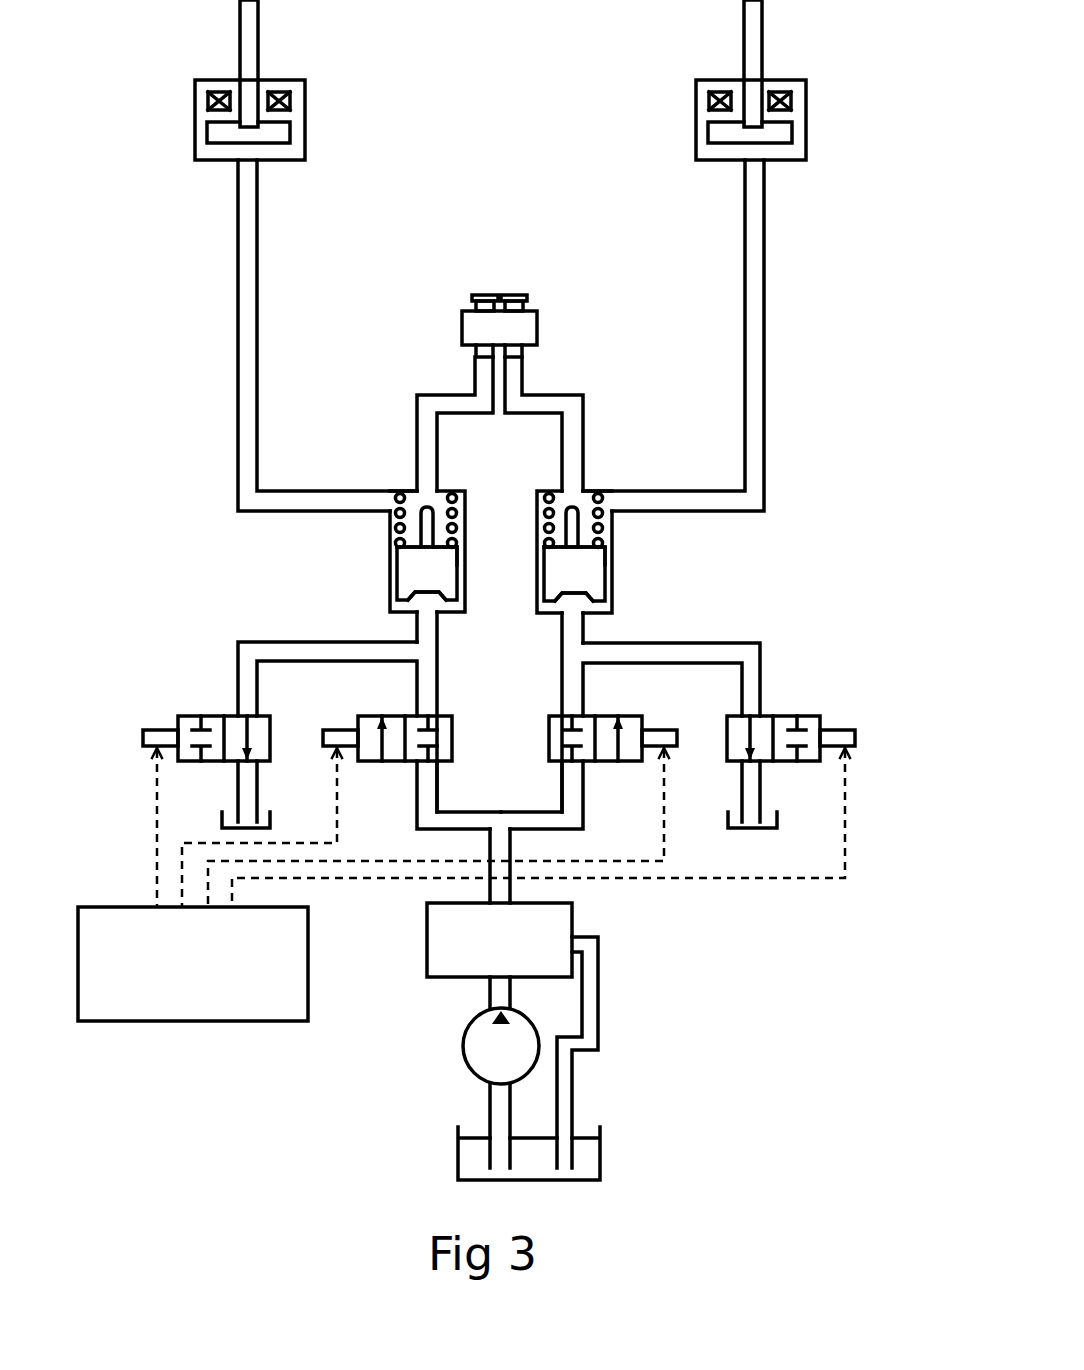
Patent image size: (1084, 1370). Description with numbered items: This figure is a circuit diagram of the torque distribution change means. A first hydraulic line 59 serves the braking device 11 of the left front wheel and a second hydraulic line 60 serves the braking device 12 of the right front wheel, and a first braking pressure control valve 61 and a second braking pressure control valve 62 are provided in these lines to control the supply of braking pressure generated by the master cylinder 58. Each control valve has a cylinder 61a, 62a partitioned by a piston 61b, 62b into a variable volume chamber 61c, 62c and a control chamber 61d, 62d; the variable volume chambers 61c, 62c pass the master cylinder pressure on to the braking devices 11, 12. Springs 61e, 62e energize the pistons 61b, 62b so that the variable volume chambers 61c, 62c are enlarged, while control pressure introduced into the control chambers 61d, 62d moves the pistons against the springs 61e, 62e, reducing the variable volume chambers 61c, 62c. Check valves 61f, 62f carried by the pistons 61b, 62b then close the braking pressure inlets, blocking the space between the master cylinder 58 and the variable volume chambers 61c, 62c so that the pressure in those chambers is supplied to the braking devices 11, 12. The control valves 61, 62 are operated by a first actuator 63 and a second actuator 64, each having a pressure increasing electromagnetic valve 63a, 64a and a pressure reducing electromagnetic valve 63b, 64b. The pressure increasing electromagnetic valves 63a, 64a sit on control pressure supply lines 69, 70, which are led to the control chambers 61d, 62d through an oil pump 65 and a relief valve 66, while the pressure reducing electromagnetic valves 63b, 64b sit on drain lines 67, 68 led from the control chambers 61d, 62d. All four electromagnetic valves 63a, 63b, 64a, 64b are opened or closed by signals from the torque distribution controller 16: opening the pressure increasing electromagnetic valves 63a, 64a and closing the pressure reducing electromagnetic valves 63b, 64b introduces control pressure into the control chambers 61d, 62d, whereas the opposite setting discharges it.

The braking device 11 is at (305, 92).
The braking device 12 is at (806, 92).
The torque distribution controller 16 is at (185, 1021).
The master cylinder 58 is at (537, 330).
The first hydraulic line 59 is at (259, 272).
The second hydraulic line 60 is at (745, 272).
The first braking pressure control valve 61 is at (400, 605).
The cylinder 61a is at (388, 580).
The piston 61b is at (403, 567).
The variable volume chamber 61c is at (443, 503).
The control chamber 61d is at (410, 608).
The spring 61e is at (393, 498).
The check valve 61f is at (427, 507).
The second braking pressure control valve 62 is at (598, 605).
The cylinder 62a is at (615, 575).
The piston 62b is at (593, 563).
The variable volume chamber 62c is at (558, 495).
The control chamber 62d is at (583, 607).
The spring 62e is at (600, 500).
The check valve 62f is at (573, 507).
The first actuator 63 is at (262, 757).
The pressure increasing electromagnetic valve 63a is at (367, 717).
The pressure reducing electromagnetic valve 63b is at (215, 716).
The second actuator 64 is at (577, 763).
The pressure increasing electromagnetic valve 64a is at (635, 717).
The pressure reducing electromagnetic valve 64b is at (785, 717).
The oil pump 65 is at (462, 1063).
The relief valve 66 is at (427, 958).
The drain line 67 is at (263, 642).
The drain line 68 is at (742, 643).
The control pressure supply line 69 is at (422, 790).
The control pressure supply line 70 is at (578, 800).